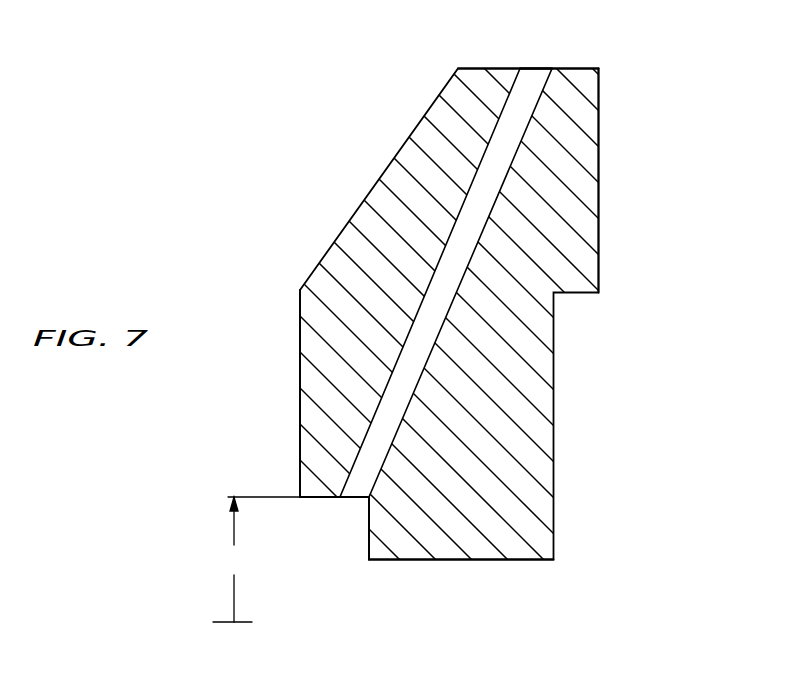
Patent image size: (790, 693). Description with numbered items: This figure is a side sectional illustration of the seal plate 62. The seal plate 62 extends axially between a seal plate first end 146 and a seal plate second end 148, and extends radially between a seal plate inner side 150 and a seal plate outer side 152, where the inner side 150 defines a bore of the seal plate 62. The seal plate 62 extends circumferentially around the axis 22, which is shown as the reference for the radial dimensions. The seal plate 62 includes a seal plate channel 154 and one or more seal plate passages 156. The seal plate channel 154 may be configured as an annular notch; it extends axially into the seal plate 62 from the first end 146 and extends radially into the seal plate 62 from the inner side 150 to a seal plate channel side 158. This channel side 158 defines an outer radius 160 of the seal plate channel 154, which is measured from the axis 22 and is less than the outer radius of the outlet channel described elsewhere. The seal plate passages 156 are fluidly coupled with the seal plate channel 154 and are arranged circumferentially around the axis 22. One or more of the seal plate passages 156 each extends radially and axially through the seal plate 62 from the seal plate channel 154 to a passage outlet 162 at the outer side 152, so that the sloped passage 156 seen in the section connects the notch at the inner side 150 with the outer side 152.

The seal plate 62 is at (395, 315).
The seal plate first end 146 is at (300, 338).
The seal plate second end 148 is at (599, 172).
The seal plate inner side 150 is at (502, 560).
The seal plate outer side 152 is at (583, 68).
The seal plate channel 154 is at (332, 549).
The seal plate passage 156 is at (400, 395).
The seal plate channel side 158 is at (318, 498).
The outer radius 160 is at (257, 559).
The passage outlet 162 is at (536, 68).
The axis 22 is at (220, 623).